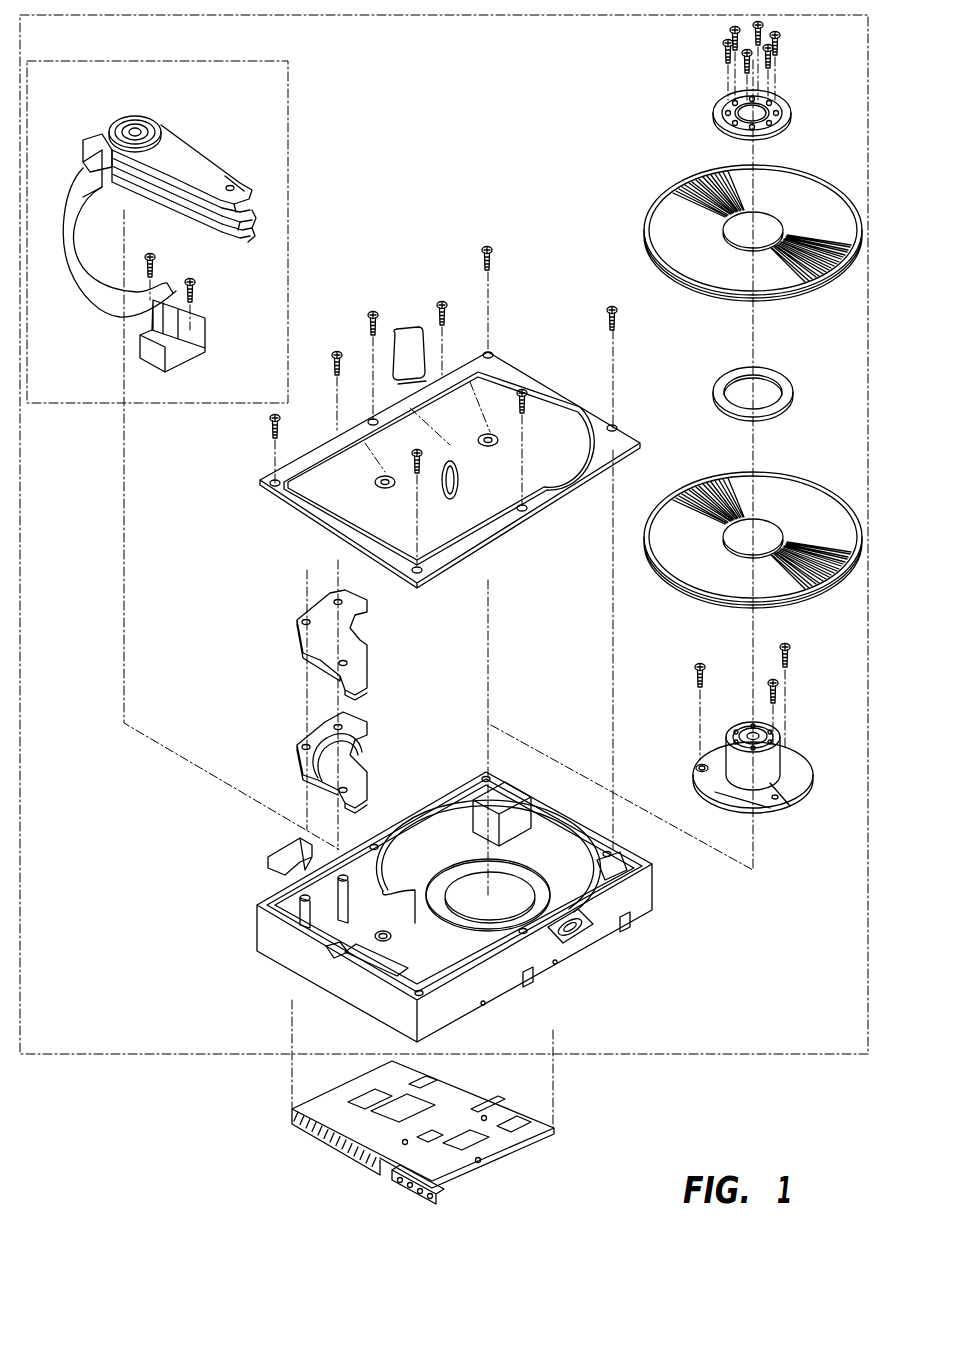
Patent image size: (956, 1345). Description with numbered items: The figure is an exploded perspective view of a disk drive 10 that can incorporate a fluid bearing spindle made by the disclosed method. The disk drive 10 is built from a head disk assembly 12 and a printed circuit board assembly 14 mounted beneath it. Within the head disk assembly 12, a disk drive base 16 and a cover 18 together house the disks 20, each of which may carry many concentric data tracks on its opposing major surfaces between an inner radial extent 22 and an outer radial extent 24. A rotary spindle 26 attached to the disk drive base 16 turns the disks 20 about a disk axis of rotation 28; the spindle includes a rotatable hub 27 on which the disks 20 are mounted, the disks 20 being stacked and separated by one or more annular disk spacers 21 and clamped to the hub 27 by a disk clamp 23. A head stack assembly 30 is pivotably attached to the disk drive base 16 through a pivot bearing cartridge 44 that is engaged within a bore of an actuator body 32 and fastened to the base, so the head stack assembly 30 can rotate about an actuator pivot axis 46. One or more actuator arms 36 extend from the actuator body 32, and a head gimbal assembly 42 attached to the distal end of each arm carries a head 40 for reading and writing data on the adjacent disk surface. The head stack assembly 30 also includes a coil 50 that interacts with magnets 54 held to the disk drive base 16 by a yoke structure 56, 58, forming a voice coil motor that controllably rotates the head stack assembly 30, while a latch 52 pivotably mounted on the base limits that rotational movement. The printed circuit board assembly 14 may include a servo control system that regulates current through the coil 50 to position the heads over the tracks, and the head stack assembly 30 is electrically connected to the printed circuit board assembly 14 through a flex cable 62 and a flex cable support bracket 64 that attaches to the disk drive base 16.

The disk drive 10 is at (109, 1114).
The head disk assembly 12 is at (655, 1056).
The printed circuit board assembly 14 is at (528, 1153).
The disk drive base 16 is at (591, 943).
The cover 18 is at (498, 352).
The disks 20 is at (810, 185).
The annular disk spacers 21 is at (712, 392).
The inner radial extent 22 is at (776, 214).
The outer radial extent 24 is at (692, 288).
The disk clamp 23 is at (785, 93).
The rotary spindle 26 is at (797, 795).
The rotatable hub 27 is at (735, 760).
The disk axis of rotation 28 is at (760, 318).
The head stack assembly 30 is at (197, 404).
The actuator body 32 is at (128, 116).
The actuator arms 36 is at (183, 150).
The head 40 is at (257, 238).
The head gimbal assemblies 42 is at (245, 198).
The pivot bearing cartridge 44 is at (147, 118).
The actuator pivot axis 46 is at (123, 600).
The coil 50 is at (100, 142).
The latch 52 is at (268, 857).
The magnets 54 is at (368, 738).
The yoke structure 56 is at (300, 640).
The yoke structure 58 is at (297, 752).
The flex cable 62 is at (85, 305).
The flex cable support bracket 64 is at (207, 360).